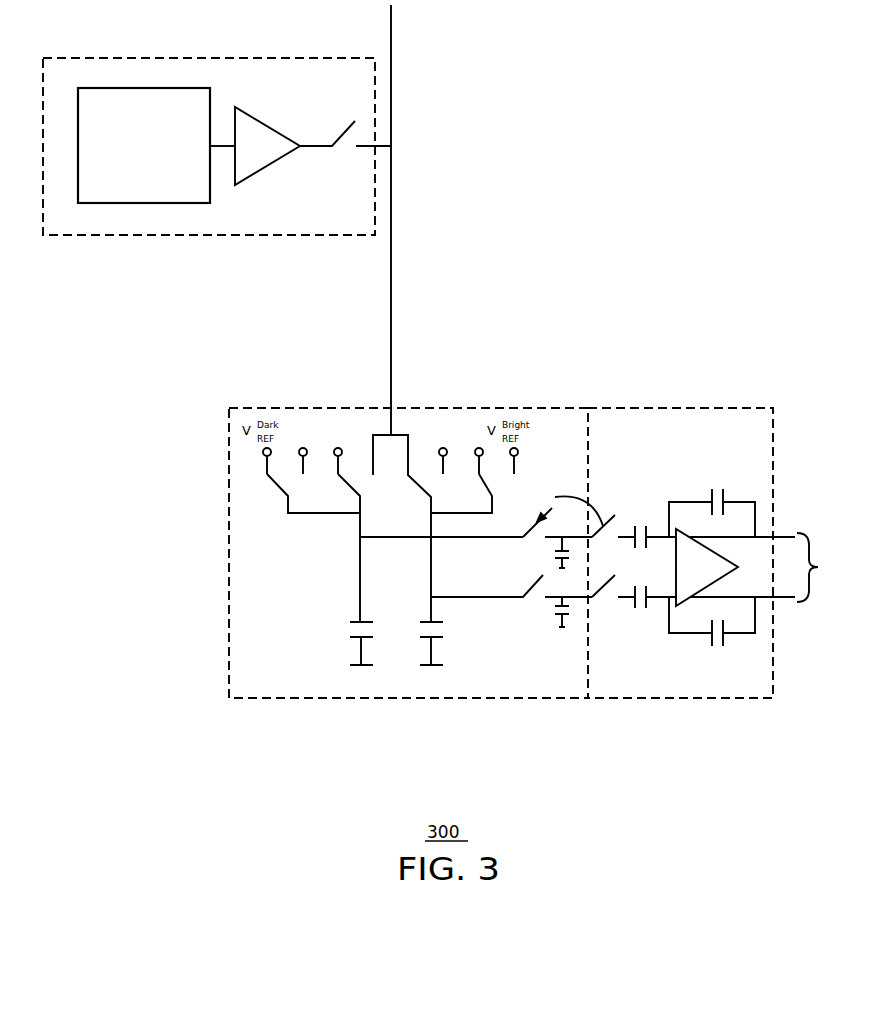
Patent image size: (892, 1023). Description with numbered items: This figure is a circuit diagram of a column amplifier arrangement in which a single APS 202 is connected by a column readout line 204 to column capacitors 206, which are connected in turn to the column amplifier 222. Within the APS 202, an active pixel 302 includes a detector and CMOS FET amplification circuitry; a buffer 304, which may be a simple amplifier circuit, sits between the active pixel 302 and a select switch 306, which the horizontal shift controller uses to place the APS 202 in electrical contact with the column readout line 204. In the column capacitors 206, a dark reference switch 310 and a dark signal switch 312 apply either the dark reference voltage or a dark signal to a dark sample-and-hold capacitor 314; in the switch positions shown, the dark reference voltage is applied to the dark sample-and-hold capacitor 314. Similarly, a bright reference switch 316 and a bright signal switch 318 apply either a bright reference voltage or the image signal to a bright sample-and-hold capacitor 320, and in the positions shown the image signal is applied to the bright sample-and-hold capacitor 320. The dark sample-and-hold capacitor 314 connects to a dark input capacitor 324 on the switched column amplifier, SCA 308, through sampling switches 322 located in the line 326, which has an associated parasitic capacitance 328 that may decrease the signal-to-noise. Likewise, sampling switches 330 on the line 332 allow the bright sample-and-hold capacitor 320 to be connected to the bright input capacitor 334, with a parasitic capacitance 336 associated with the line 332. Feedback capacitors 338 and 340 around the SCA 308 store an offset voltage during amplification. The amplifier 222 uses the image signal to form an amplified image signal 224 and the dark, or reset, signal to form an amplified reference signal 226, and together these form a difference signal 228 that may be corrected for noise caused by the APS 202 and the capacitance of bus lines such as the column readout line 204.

The APS 202 is at (75, 58).
The column readout line 204 is at (391, 207).
The column capacitors 206 is at (455, 408).
The amplifier 222 is at (657, 408).
The amplified image signal 224 is at (782, 537).
The amplified reference signal 226 is at (782, 597).
The difference signal 228 is at (831, 567).
The active pixel 302 is at (145, 88).
The buffer 304 is at (262, 122).
The select switch 306 is at (342, 135).
The SCA 308 is at (701, 540).
The dark reference switch 310 is at (277, 488).
The dark signal switch 312 is at (350, 484).
The dark sample-and-hold capacitor 314 is at (349, 641).
The bright reference switch 316 is at (485, 483).
The bright signal switch 318 is at (423, 489).
The bright sample-and-hold capacitor 320 is at (445, 641).
The sampling switches 322 is at (558, 510).
The dark input capacitor 324 is at (644, 519).
The line 326 is at (405, 540).
The parasitic capacitance 328 is at (555, 553).
The sampling switches 330 is at (615, 577).
The line 332 is at (493, 594).
The bright input capacitor 334 is at (642, 580).
The parasitic capacitance 336 is at (570, 612).
The feedback capacitor 338 is at (712, 489).
The feedback capacitor 340 is at (712, 642).